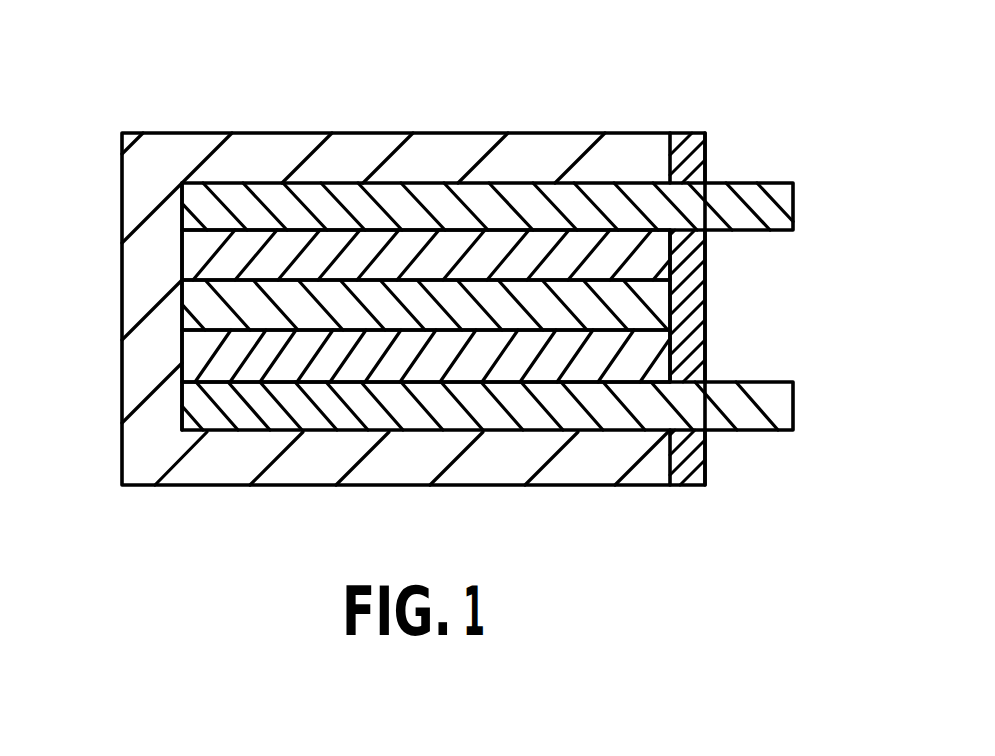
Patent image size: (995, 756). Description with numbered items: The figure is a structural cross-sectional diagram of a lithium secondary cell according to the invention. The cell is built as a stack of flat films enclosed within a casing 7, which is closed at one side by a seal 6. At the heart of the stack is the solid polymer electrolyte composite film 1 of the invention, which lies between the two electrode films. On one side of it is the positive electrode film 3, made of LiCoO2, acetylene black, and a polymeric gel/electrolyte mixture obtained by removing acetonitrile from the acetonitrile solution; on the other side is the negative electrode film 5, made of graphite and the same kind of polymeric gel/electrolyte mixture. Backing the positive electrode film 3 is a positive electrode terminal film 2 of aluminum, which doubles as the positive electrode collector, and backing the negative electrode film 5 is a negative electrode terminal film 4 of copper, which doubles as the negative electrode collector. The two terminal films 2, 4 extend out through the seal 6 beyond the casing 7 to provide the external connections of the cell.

The solid polymer electrolyte composite film 1 is at (648, 310).
The positive electrode terminal film 2 is at (784, 208).
The positive electrode film 3 is at (194, 266).
The negative electrode terminal film 4 is at (784, 415).
The negative electrode film 5 is at (208, 365).
The seal 6 is at (688, 260).
The casing 7 is at (370, 147).